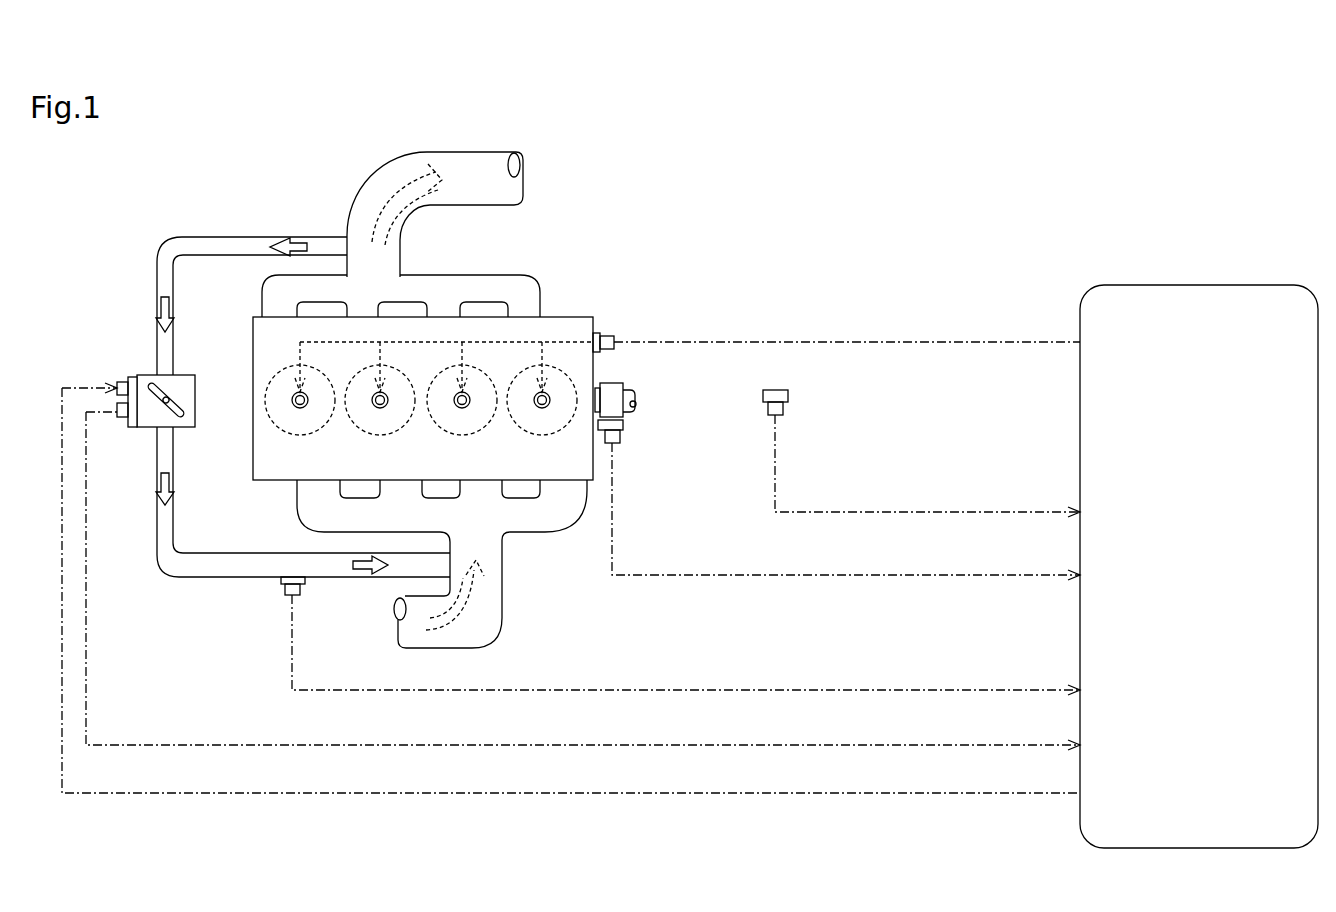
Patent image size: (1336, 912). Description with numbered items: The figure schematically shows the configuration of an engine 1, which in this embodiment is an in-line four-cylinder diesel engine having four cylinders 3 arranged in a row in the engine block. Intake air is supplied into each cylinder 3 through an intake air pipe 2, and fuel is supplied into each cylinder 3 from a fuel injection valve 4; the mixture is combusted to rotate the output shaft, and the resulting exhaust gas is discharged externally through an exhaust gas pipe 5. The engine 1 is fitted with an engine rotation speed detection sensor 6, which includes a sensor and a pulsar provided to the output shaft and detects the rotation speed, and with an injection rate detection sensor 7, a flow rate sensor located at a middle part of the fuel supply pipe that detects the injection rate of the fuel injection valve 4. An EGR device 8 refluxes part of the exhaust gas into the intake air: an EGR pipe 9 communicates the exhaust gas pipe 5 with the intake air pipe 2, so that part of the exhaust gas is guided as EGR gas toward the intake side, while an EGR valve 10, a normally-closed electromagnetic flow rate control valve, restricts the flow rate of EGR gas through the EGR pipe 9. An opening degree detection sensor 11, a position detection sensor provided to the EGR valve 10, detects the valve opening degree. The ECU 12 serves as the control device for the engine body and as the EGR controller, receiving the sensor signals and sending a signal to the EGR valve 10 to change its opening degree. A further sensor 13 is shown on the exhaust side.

The engine 1 is at (112, 147).
The intake air pipe 2 is at (398, 632).
The cylinder 3 is at (336, 398).
The fuel injection valve 4 is at (300, 409).
The exhaust gas pipe 5 is at (486, 162).
The engine rotation speed detection sensor 6 is at (620, 436).
The injection rate detection sensor 7 is at (790, 409).
The EGR device 8 is at (121, 316).
The EGR pipe 9 is at (213, 240).
The EGR valve 10 is at (194, 385).
The opening degree detection sensor 11 is at (121, 418).
The ECU 12 is at (1199, 296).
The exhaust gas sensor 13 is at (281, 589).